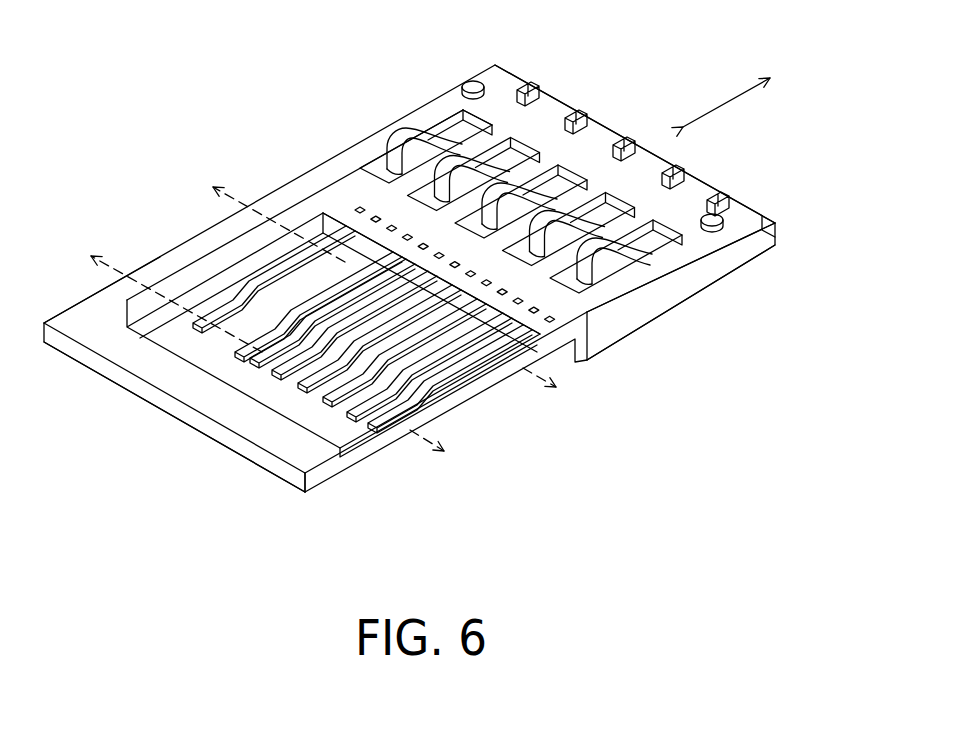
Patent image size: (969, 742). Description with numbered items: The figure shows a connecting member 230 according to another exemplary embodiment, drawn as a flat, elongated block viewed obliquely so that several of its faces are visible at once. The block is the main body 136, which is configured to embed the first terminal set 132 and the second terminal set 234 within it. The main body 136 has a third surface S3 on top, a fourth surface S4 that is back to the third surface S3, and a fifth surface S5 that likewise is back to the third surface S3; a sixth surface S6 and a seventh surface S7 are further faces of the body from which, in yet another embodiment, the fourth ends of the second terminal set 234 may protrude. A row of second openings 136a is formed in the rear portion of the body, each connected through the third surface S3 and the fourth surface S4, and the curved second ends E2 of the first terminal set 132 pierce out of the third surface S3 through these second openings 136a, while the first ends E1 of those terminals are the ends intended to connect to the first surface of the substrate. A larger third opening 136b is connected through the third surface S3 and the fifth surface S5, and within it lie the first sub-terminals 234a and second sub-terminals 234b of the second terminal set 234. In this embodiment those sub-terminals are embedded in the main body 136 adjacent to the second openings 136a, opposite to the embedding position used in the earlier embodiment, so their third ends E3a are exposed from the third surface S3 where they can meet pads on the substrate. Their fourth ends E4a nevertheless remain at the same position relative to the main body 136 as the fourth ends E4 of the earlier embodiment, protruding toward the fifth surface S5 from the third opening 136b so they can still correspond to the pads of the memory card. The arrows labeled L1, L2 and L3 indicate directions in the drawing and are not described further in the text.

The connecting member 230 is at (736, 531).
The main body 136 is at (665, 300).
The second openings 136a is at (461, 119).
The third opening 136b is at (322, 211).
The first terminal set 132 is at (441, 128).
The second terminal set 234 is at (335, 242).
The first sub-terminals 234a is at (306, 275).
The second sub-terminals 234b is at (270, 300).
The first end E1 is at (529, 84).
The second end E2 is at (381, 150).
The third ends E3a is at (560, 318).
The fourth end E4 is at (484, 363).
The fourth ends E4a is at (230, 305).
The first direction L1 is at (713, 100).
The second direction L2 is at (373, 271).
The third direction L3 is at (250, 344).
The third surface S3 is at (107, 346).
The fourth surface S4 is at (719, 278).
The fifth surface S5 is at (353, 463).
The sixth surface S6 is at (73, 302).
The seventh surface S7 is at (325, 484).